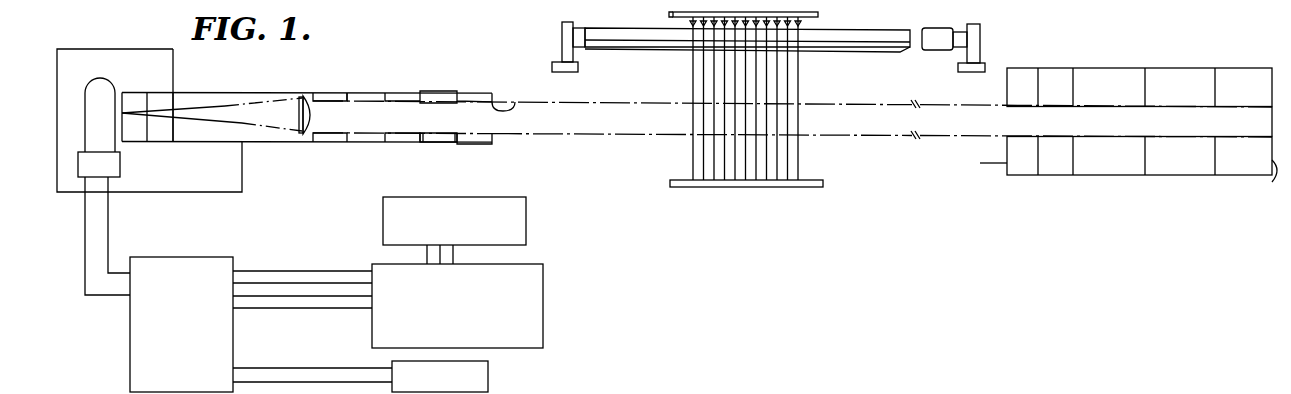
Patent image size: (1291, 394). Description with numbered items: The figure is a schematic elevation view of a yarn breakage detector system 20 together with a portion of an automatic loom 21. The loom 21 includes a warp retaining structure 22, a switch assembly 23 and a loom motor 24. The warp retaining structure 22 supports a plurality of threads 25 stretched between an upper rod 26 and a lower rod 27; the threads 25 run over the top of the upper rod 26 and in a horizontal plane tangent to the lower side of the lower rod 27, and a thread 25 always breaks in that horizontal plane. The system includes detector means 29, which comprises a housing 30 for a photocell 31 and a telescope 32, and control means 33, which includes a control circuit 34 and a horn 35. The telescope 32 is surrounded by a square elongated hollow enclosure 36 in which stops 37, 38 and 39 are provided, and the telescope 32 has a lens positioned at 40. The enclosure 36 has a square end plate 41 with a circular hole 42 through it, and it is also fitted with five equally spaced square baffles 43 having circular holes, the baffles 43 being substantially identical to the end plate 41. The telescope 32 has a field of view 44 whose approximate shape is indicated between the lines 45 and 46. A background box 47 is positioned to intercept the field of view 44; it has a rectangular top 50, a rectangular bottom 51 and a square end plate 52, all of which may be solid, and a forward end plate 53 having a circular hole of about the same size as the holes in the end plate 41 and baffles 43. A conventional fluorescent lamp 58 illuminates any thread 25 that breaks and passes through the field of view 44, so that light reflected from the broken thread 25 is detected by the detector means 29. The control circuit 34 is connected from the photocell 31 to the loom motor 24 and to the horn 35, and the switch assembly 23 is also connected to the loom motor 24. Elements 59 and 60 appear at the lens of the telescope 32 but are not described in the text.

The yarn breakage detector system 20 is at (758, 126).
The automatic loom 21 is at (652, 233).
The warp retaining structure 22 is at (815, 167).
The switch assembly 23 is at (528, 228).
The loom motor 24 is at (545, 300).
The threads 25 is at (713, 160).
The upper rod 26 is at (669, 13).
The lower rod 27 is at (681, 188).
The detector means 29 is at (493, 48).
The housing 30 is at (287, 92).
The photocell 31 is at (101, 78).
The telescope 32 is at (378, 142).
The control means 33 is at (121, 336).
The control circuit 34 is at (236, 362).
The horn 35 is at (488, 382).
The square elongated hollow enclosure 36 is at (437, 92).
The stop 37 is at (122, 98).
The stop 38 is at (147, 98).
The stop 39 is at (174, 96).
The lens position 40 is at (297, 128).
The square end plate 41 is at (495, 98).
The circular hole 42 is at (512, 103).
The square baffles 43 is at (348, 96).
The field of view 44 is at (557, 130).
The field of view boundary line 45 is at (614, 135).
The field of view boundary line 46 is at (608, 104).
The background box 47 is at (1126, 176).
The rectangular top 50 is at (1120, 68).
The rectangular bottom 51 is at (1162, 176).
The square end plate 52 is at (1272, 182).
The forward end plate 53 is at (981, 165).
The fluorescent lamp 58 is at (870, 28).
The filter plate 59 is at (299, 111).
The lens 60 is at (315, 116).